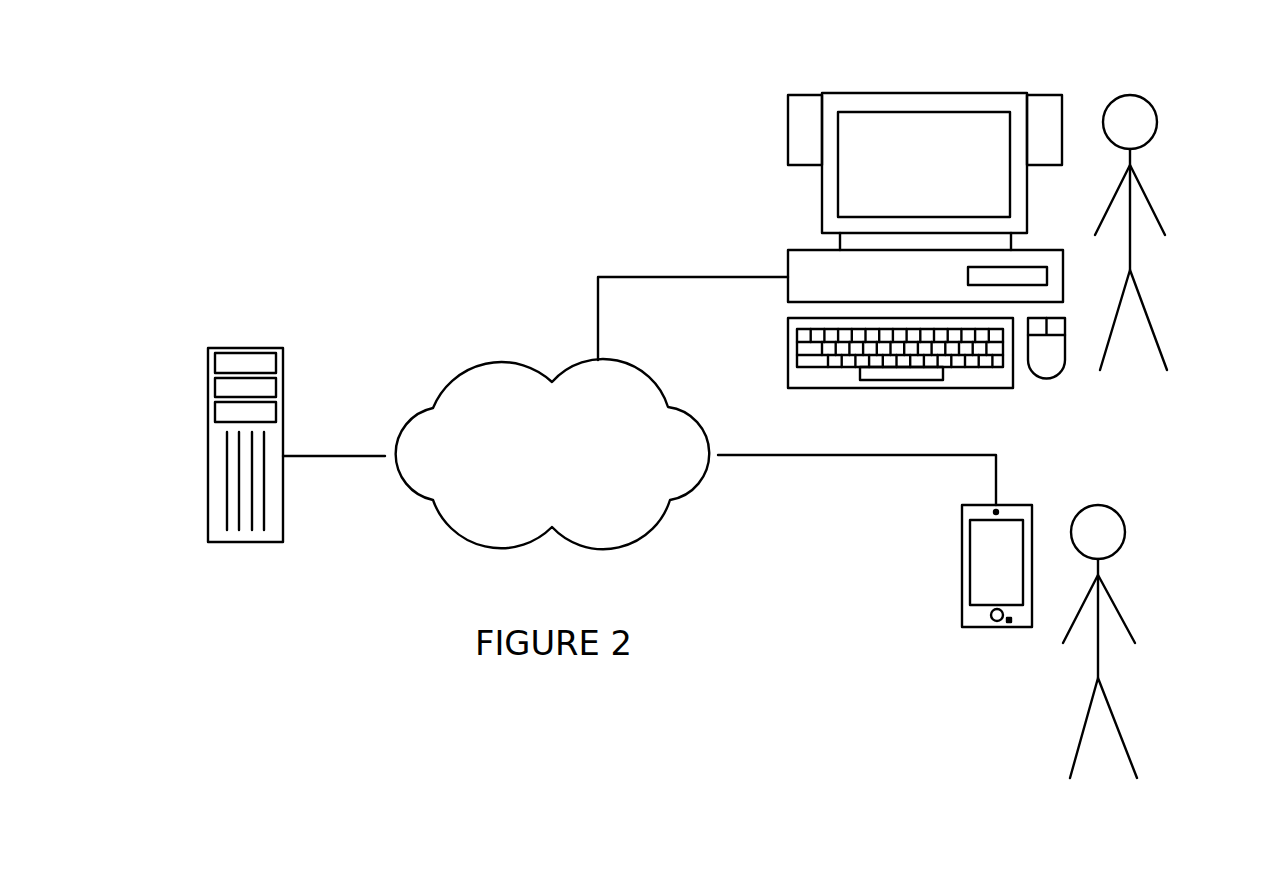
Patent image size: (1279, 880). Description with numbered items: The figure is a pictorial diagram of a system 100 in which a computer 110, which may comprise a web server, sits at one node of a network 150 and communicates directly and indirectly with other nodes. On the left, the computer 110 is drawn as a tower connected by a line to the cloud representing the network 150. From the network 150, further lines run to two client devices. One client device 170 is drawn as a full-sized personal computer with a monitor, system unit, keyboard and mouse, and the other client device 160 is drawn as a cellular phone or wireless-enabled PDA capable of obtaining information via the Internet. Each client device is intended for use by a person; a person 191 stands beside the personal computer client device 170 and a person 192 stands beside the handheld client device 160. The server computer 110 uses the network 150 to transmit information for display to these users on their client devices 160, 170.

The system 100 is at (308, 80).
The computer 110 is at (208, 362).
The network 150 is at (500, 360).
The client device 160 is at (942, 112).
The client device 170 is at (787, 198).
The person 191 is at (1155, 178).
The person 192 is at (1123, 572).